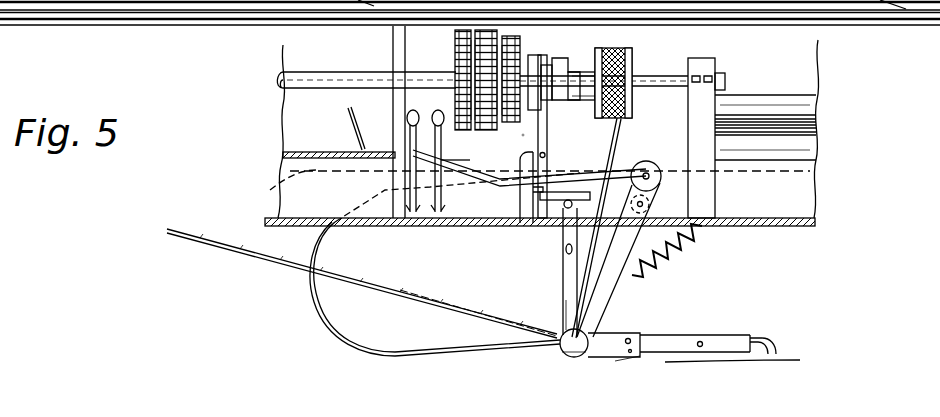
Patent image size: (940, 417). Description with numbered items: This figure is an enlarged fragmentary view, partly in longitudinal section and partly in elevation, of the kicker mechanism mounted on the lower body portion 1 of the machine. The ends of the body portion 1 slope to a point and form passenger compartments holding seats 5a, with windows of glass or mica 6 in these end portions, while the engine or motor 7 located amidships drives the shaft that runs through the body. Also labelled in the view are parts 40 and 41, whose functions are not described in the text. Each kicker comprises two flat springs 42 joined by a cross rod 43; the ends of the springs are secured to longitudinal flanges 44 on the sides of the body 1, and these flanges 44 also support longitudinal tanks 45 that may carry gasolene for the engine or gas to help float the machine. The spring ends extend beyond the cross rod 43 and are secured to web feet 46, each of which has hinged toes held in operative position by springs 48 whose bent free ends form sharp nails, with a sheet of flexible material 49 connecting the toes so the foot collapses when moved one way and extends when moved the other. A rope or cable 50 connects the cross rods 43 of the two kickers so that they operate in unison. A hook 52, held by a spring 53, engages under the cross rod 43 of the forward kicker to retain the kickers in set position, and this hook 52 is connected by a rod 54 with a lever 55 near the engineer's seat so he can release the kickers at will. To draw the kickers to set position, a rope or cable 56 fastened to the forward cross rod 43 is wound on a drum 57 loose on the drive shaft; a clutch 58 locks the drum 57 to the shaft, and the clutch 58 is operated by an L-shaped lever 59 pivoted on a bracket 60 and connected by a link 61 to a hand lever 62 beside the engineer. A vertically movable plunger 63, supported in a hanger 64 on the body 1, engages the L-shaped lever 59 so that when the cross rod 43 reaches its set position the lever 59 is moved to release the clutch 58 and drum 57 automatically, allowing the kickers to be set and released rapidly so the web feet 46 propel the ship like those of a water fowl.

The lower body portion 1 is at (790, 231).
The seat 5a is at (788, 156).
The window 6 is at (346, 135).
The engine or motor 7 is at (518, 136).
The shaft 40 is at (311, 78).
The cable 41 is at (350, 334).
The flat spring 42 is at (330, 297).
The cross rod 43 is at (530, 341).
The longitudinal flange 44 is at (281, 186).
The longitudinal tank 45 is at (470, 66).
The web foot 46 is at (720, 341).
The spring 48 is at (780, 349).
The sheet of flexible material 49 is at (800, 360).
The rope or cable 50 is at (238, 251).
The hook 52 is at (608, 288).
The spring 53 is at (664, 269).
The rod 54 is at (481, 190).
The lever 55 is at (438, 144).
The rope or cable 56 is at (617, 153).
The drum 57 is at (622, 62).
The clutch 58 is at (573, 60).
The L-shaped lever 59 is at (548, 137).
The bracket 60 is at (561, 250).
The link 61 is at (473, 178).
The hand lever 62 is at (412, 114).
The plunger 63 is at (567, 292).
The hanger 64 is at (562, 279).